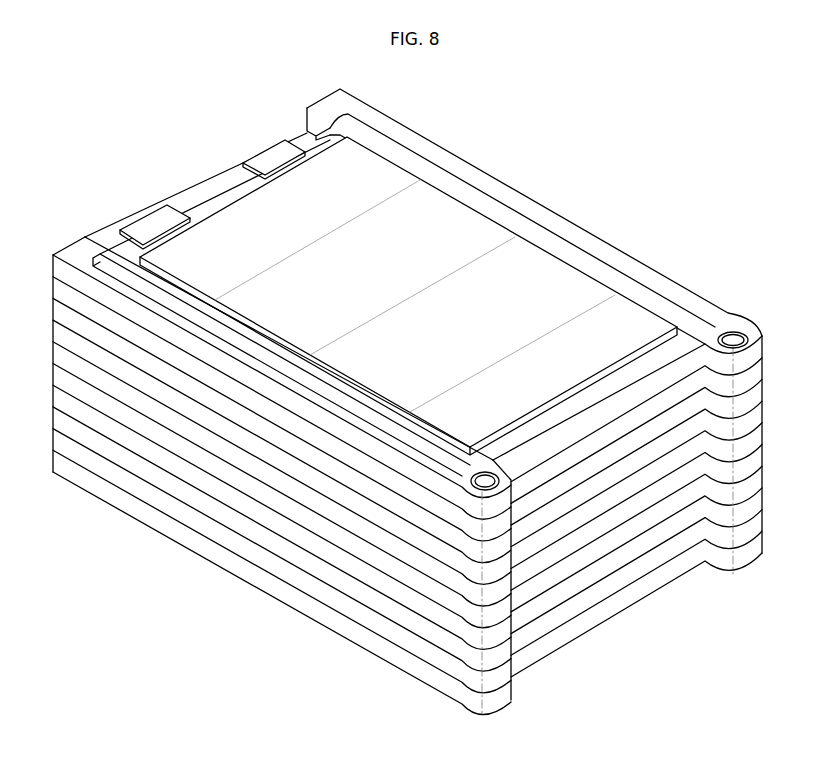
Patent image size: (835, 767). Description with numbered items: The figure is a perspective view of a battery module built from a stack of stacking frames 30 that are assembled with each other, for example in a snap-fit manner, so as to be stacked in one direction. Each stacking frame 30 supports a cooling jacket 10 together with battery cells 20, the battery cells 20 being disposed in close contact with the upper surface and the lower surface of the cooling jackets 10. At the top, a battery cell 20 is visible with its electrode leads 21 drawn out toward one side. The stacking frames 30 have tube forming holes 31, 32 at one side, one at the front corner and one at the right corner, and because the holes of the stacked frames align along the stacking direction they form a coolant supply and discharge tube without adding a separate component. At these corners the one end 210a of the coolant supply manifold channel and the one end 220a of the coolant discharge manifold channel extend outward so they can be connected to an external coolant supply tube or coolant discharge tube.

The cooling jacket 10 is at (404, 146).
The battery cell 20 is at (448, 213).
The electrode lead 21 is at (257, 157).
The stacking frame 30 is at (74, 228).
The tube forming hole 31 is at (473, 492).
The tube forming hole 32 is at (750, 332).
The one end of the coolant supply manifold channel 210a is at (477, 483).
The one end of the coolant discharge manifold channel 220a is at (724, 344).